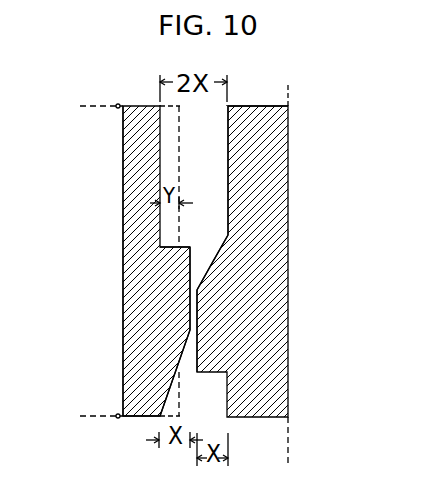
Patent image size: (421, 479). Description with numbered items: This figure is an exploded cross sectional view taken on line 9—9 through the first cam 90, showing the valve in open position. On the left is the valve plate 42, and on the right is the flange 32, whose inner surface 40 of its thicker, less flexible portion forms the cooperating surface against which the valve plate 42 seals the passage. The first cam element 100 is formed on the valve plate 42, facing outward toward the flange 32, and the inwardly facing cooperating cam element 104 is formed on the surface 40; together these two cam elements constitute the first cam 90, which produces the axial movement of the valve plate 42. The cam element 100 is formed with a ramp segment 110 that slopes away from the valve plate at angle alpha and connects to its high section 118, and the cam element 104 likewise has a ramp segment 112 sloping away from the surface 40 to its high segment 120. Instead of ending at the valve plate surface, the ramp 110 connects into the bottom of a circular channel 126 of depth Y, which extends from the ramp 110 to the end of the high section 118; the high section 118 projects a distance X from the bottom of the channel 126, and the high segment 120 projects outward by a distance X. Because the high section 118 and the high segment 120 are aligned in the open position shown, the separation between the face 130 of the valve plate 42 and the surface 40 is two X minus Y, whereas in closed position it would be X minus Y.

The section line 9— 9 is at (81, 258).
The circular channel 126 is at (150, 157).
The first cam 90 is at (118, 238).
The high section 118 is at (186, 297).
The first cam element 100 is at (188, 330).
The ramp segment 110 is at (178, 363).
The valve plate 42 is at (137, 388).
The flange 32 is at (257, 390).
The face of the valve plate 130 is at (179, 135).
The inner surface 40 is at (230, 159).
The ramp segment 112 is at (215, 264).
The cooperating cam element 104 is at (197, 293).
The high segment 120 is at (197, 327).